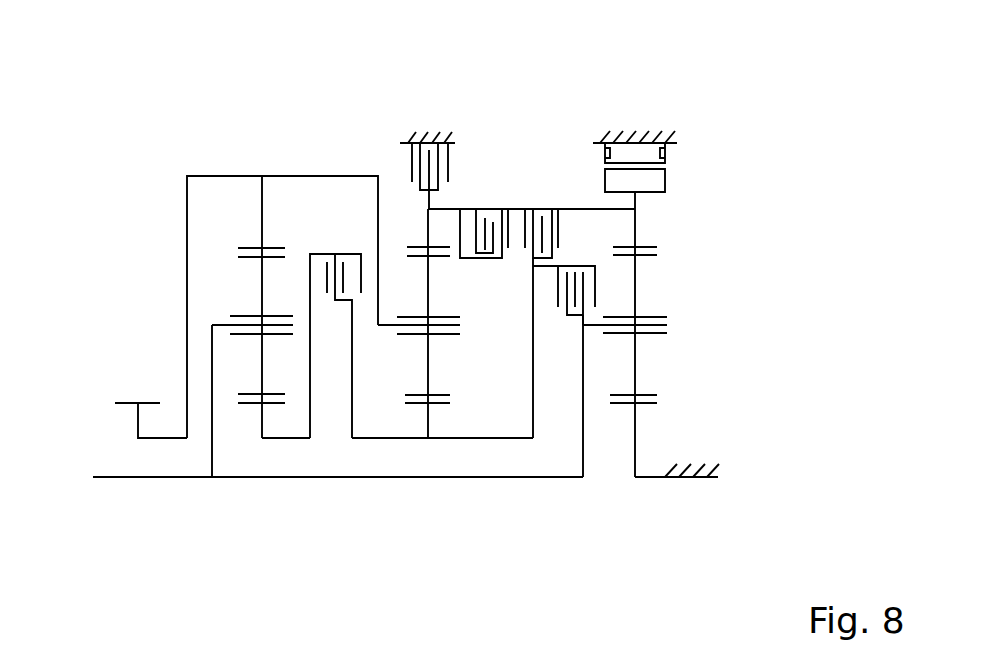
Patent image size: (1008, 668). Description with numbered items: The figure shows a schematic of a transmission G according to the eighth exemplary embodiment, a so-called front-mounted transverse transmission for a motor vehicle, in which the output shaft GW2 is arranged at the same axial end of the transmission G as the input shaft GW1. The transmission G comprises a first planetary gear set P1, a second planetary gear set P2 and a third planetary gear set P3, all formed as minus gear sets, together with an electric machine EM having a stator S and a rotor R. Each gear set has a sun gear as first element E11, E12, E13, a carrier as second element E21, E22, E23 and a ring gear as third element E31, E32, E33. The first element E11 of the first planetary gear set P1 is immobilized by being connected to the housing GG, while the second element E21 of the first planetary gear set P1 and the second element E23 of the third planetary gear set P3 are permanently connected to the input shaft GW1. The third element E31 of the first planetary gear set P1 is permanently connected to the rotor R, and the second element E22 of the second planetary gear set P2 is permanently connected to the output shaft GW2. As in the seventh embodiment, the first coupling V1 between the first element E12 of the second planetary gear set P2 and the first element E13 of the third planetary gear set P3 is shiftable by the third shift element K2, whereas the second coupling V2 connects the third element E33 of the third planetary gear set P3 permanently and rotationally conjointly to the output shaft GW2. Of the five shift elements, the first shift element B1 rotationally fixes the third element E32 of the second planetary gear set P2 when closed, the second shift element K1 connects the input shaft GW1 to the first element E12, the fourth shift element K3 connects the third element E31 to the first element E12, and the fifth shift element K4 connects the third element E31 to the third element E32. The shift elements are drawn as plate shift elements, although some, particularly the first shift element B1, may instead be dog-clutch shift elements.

The transmission G is at (168, 300).
The housing GG is at (697, 468).
The input shaft GW1 is at (163, 477).
The output shaft GW2 is at (125, 398).
The electric machine EM is at (725, 164).
The stator S is at (679, 153).
The rotor R is at (679, 179).
The first planetary gear set P1 is at (635, 484).
The second planetary gear set P2 is at (429, 484).
The third planetary gear set P3 is at (262, 484).
The first element of the first planetary gear set E11 is at (617, 407).
The second element of the first planetary gear set E21 is at (596, 331).
The third element of the first planetary gear set E31 is at (647, 244).
The first element of the second planetary gear set E12 is at (443, 407).
The second element of the second planetary gear set E22 is at (384, 328).
The third element of the second planetary gear set E32 is at (408, 244).
The first element of the third planetary gear set E13 is at (238, 406).
The second element of the third planetary gear set E23 is at (226, 320).
The third element of the third planetary gear set E33 is at (248, 245).
The second shift element K1 is at (577, 262).
The third shift element K2 is at (333, 249).
The fourth shift element K3 is at (535, 205).
The fifth shift element K4 is at (487, 205).
The first shift element B1 is at (405, 167).
The first coupling V1 is at (285, 440).
The second coupling V2 is at (232, 176).